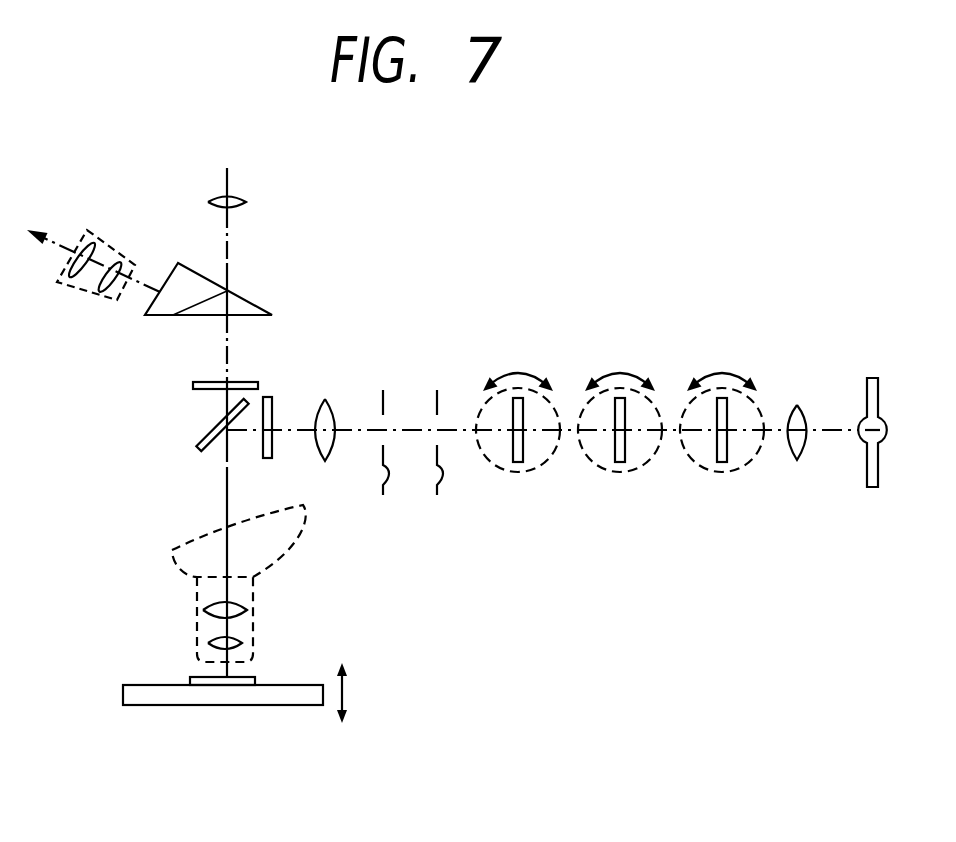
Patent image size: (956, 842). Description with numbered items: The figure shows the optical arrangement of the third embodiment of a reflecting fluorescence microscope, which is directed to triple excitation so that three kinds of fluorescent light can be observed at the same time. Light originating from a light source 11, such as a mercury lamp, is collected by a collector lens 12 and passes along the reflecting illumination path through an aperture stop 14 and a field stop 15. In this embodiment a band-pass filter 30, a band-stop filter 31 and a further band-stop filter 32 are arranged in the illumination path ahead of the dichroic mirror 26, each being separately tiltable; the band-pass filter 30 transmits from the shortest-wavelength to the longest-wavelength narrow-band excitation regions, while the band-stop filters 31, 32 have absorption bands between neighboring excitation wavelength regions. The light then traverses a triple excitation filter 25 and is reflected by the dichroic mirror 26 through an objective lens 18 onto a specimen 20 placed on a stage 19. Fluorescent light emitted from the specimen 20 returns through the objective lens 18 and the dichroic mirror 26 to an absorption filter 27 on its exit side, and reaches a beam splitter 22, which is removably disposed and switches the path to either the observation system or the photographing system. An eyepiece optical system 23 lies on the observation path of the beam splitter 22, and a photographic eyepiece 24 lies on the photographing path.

The light source 11 is at (872, 487).
The collector lens 12 is at (805, 452).
The aperture stop 14 is at (439, 460).
The field stop 15 is at (384, 460).
The objective lens 18 is at (193, 617).
The stage 19 is at (308, 685).
The specimen 20 is at (254, 678).
The beam splitter 22 is at (253, 296).
The eyepiece optical system 23 is at (88, 293).
The photographic eyepiece 24 is at (246, 200).
The triple excitation filter 25 is at (272, 447).
The dichroic mirror 26 is at (201, 441).
The absorption filter 27 is at (258, 381).
The band-pass filter 30 is at (708, 470).
The band-stop filter 31 is at (607, 472).
The band-stop filter 32 is at (507, 472).